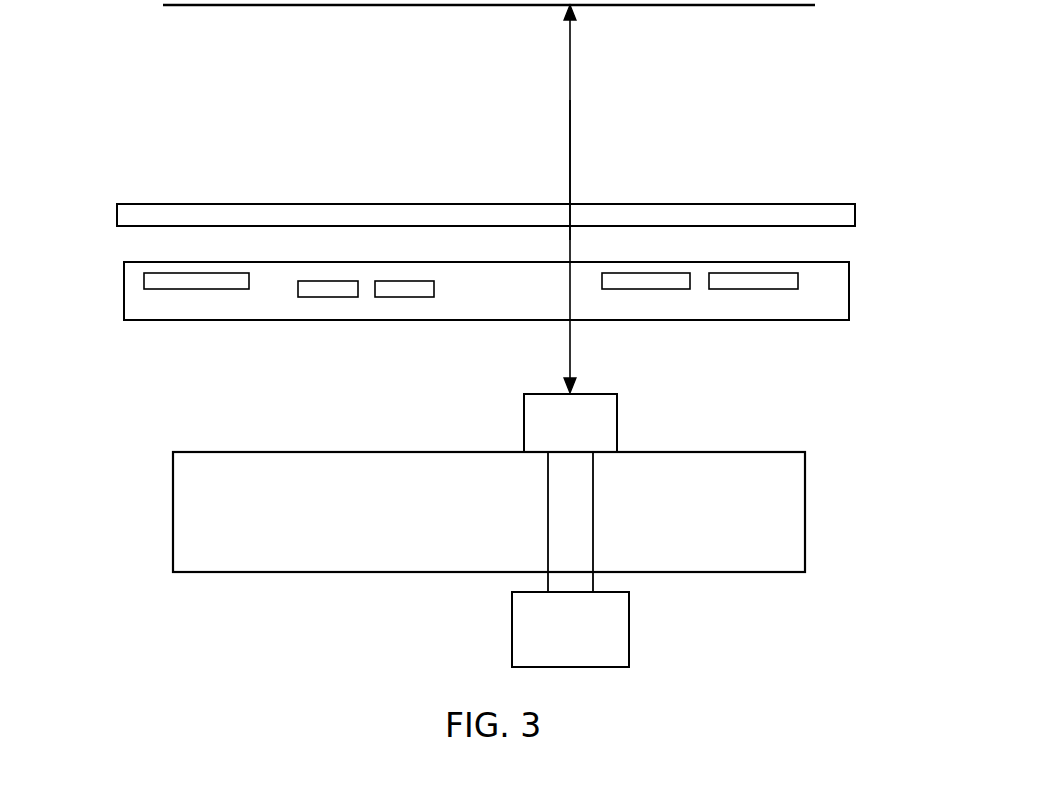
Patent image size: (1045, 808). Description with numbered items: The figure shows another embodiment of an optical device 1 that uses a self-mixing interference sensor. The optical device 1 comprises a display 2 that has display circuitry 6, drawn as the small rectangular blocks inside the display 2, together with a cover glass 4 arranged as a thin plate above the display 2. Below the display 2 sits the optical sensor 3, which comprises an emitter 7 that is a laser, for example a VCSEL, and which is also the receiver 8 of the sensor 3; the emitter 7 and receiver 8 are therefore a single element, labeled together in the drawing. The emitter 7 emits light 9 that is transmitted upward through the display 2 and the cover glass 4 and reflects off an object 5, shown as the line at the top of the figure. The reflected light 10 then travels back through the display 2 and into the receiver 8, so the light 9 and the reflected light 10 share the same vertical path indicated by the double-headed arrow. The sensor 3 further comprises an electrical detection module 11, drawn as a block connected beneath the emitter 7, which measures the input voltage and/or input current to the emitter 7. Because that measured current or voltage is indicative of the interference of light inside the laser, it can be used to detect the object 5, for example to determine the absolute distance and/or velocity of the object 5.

The optical device 1 is at (476, 247).
The display 2 is at (152, 262).
The optical sensor 3 is at (489, 517).
The cover glass 4 is at (185, 204).
The object 5 is at (283, 6).
The display circuitry 6 is at (193, 289).
The emitter 7 is at (524, 422).
The receiver 8 is at (570, 423).
The light 9 is at (570, 122).
The reflected light 10 is at (570, 170).
The electrical detection module 11 is at (512, 627).